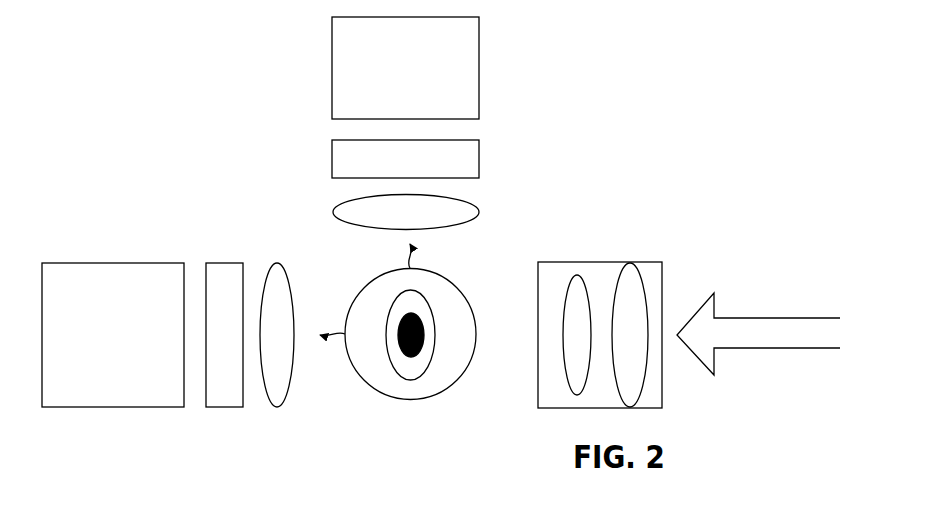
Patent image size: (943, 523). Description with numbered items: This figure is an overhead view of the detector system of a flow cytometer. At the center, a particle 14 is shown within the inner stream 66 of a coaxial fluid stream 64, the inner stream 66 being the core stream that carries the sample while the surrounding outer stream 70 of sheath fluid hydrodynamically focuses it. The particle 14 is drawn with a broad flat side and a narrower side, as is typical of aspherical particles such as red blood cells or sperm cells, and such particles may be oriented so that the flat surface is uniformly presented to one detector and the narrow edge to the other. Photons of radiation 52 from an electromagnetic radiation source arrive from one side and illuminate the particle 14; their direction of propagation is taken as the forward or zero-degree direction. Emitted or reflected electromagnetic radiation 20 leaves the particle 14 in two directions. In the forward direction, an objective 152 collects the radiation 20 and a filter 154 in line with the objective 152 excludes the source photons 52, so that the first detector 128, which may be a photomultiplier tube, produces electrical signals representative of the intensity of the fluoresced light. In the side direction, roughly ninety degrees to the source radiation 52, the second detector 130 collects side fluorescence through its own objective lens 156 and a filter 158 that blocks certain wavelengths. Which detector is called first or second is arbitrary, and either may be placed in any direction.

The particle 14 is at (422, 333).
The emitted or reflected electromagnetic radiation 20 is at (410, 254).
The photons of radiation 52 is at (760, 318).
The fluid stream 64 is at (409, 410).
The inner stream 66 is at (424, 316).
The outer stream 70 is at (437, 382).
The first detector 128 is at (140, 407).
The second detector 130 is at (479, 53).
The objective 152 is at (278, 403).
The filter 154 is at (219, 262).
The objective lens 156 is at (337, 211).
The filter 158 is at (479, 155).